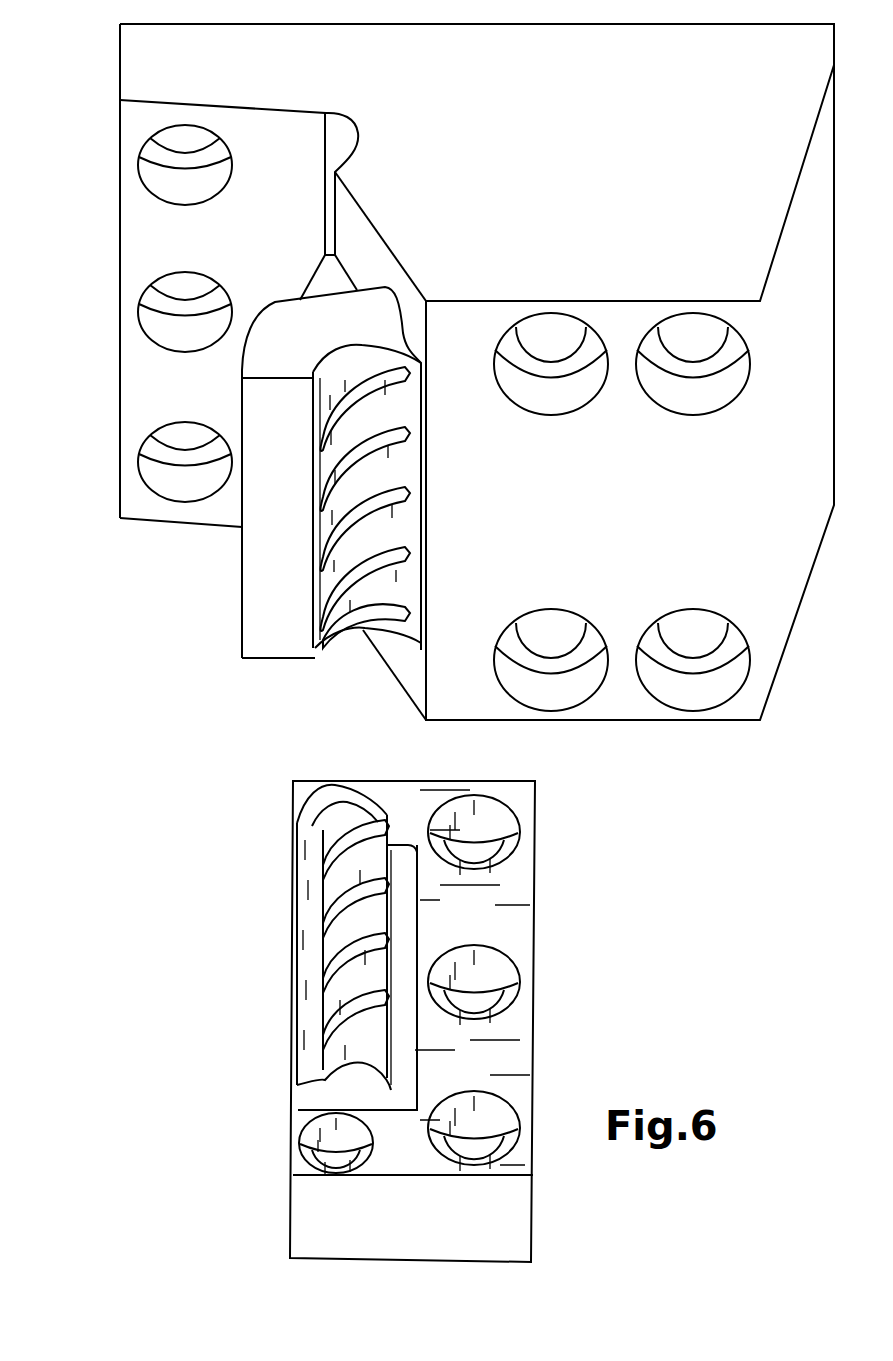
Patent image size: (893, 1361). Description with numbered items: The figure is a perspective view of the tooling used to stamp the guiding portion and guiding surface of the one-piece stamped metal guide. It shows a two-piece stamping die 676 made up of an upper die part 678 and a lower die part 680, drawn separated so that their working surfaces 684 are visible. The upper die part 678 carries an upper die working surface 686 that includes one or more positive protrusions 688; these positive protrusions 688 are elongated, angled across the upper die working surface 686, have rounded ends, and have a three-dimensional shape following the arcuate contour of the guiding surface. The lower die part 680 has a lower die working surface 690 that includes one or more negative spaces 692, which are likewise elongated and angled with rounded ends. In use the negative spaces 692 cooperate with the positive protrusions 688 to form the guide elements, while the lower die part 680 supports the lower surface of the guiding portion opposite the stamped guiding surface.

The stamping die 676 is at (708, 828).
The upper die part 678 is at (110, 296).
The lower die part 680 is at (272, 1159).
The working surfaces 684 is at (345, 656).
The upper die working surface 686 is at (392, 613).
The positive protrusions 688 is at (333, 550).
The lower die working surface 690 is at (306, 986).
The negative spaces 692 is at (368, 822).